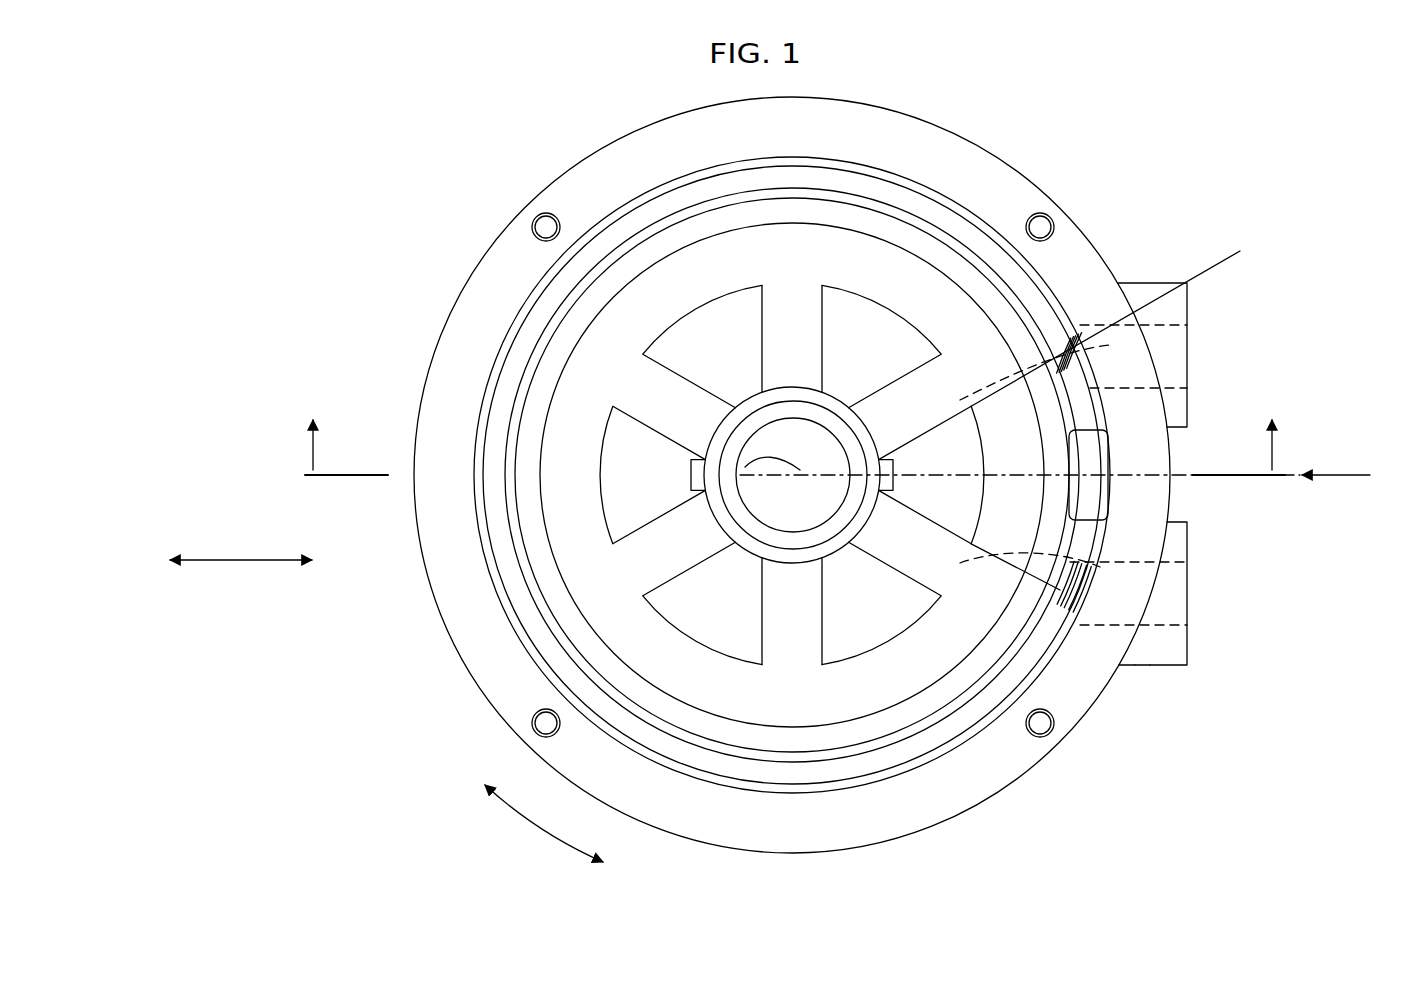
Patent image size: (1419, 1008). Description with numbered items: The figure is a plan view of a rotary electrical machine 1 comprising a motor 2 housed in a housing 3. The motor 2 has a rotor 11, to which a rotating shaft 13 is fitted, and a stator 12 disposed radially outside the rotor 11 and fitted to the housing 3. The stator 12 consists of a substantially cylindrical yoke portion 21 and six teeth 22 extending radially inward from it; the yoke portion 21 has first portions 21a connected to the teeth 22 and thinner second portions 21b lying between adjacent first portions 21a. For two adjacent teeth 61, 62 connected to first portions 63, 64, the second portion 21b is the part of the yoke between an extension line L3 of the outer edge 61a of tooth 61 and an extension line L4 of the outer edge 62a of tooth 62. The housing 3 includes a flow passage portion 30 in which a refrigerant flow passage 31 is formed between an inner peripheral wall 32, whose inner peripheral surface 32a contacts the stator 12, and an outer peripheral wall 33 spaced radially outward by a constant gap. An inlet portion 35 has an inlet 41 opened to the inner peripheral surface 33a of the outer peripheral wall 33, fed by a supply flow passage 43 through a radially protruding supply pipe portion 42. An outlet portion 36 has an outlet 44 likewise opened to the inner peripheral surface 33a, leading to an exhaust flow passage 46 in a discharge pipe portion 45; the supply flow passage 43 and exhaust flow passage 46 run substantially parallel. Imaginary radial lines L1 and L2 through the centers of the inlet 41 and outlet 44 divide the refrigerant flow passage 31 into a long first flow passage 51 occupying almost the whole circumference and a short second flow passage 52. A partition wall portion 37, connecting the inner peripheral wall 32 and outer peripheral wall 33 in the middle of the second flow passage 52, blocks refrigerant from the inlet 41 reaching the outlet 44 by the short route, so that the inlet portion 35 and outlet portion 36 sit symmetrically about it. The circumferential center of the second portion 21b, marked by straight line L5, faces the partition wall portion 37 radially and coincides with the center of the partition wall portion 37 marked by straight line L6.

The rotary electrical machine 1 is at (393, 208).
The motor 2 is at (758, 493).
The housing 3 is at (538, 186).
The rotor 11 is at (795, 405).
The stator 12 is at (792, 408).
The rotating shaft 13 is at (800, 522).
The yoke portion 21 is at (693, 297).
The first portion 21a is at (1041, 450).
The second portion 21b is at (933, 475).
The teeth 22 is at (881, 474).
The flow passage portion 30 is at (512, 682).
The refrigerant flow passage 31 is at (520, 612).
The inner peripheral wall 32 is at (868, 738).
The inner peripheral surface 32a is at (670, 283).
The outer peripheral wall 33 is at (988, 700).
The inner peripheral surface 33a is at (958, 768).
The inlet portion 35 is at (1160, 668).
The outlet portion 36 is at (1148, 278).
The partition wall portion 37 is at (972, 503).
The inlet 41 is at (1110, 620).
The supply pipe portion 42 is at (1196, 669).
The supply flow passage 43 is at (1133, 677).
The outlet 44 is at (1182, 320).
The discharge pipe portion 45 is at (1177, 402).
The exhaust flow passage 46 is at (1190, 297).
The first flow passage 51 is at (777, 747).
The second flow passage 52 is at (988, 505).
The tooth 61 is at (870, 405).
The outer edge 61a is at (866, 467).
The tooth 62 is at (862, 545).
The outer edge 62a is at (866, 485).
The first portion 63 is at (983, 360).
The first portion 64 is at (987, 590).
The imaginary straight line L1 is at (1060, 590).
The imaginary straight line L2 is at (1110, 410).
The extension line L3 is at (968, 385).
The extension line L4 is at (983, 566).
The straight line L5 is at (702, 476).
The straight line L6 is at (1110, 513).